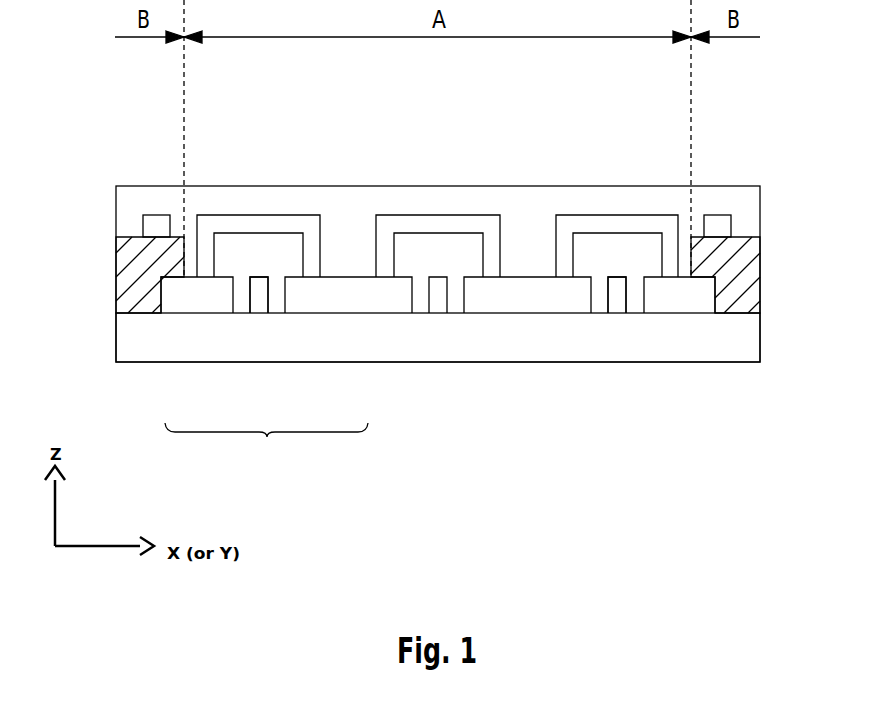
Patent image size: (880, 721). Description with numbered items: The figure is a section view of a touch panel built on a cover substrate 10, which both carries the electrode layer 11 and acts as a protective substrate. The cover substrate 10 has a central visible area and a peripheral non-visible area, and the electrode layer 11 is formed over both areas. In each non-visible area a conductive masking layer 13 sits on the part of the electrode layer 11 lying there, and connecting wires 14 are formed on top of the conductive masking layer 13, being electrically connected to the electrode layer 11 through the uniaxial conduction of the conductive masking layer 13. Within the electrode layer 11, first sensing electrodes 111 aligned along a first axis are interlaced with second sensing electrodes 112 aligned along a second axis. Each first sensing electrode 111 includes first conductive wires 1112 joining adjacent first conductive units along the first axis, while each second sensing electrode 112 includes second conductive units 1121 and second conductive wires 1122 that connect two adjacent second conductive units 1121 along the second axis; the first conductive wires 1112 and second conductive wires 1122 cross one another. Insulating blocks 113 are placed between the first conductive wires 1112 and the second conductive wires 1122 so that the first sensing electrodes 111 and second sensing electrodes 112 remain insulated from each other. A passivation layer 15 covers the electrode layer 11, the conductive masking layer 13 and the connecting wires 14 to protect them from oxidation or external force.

The cover substrate 10 is at (745, 337).
The electrode layer 11 is at (266, 448).
The conductive masking layer 13 is at (130, 256).
The connecting wires 14 is at (158, 213).
The passivation layer 15 is at (483, 195).
The first sensing electrodes 111 is at (259, 325).
The second sensing electrodes 112 is at (193, 326).
The insulating blocks 113 is at (292, 265).
The first conductive wires 1112 is at (261, 287).
The second conductive units 1121 is at (345, 293).
The second conductive wires 1122 is at (233, 222).